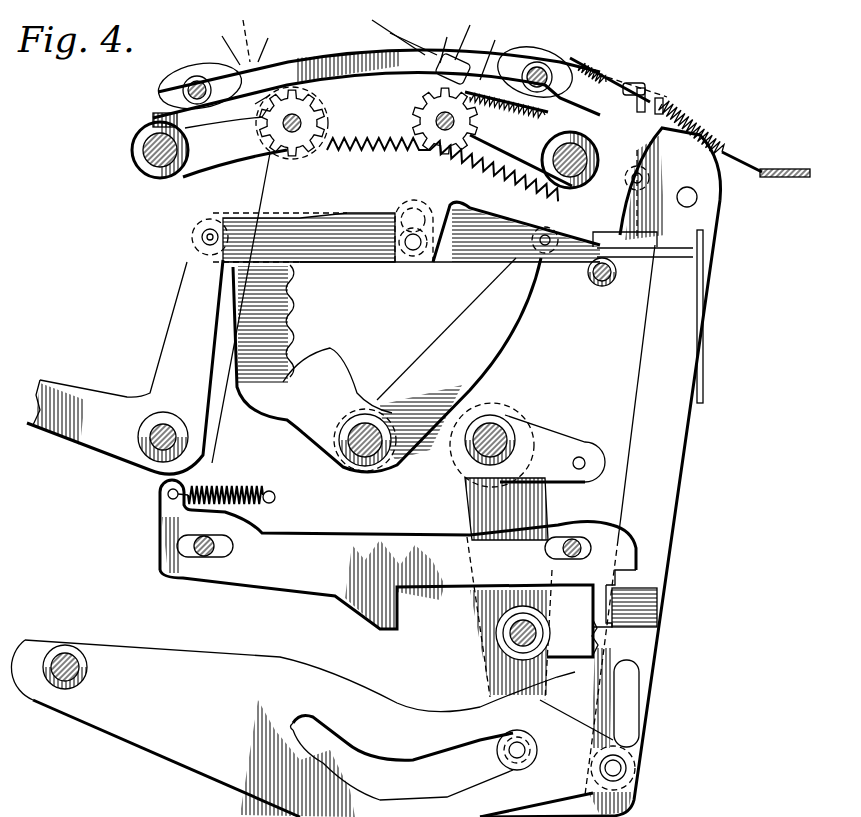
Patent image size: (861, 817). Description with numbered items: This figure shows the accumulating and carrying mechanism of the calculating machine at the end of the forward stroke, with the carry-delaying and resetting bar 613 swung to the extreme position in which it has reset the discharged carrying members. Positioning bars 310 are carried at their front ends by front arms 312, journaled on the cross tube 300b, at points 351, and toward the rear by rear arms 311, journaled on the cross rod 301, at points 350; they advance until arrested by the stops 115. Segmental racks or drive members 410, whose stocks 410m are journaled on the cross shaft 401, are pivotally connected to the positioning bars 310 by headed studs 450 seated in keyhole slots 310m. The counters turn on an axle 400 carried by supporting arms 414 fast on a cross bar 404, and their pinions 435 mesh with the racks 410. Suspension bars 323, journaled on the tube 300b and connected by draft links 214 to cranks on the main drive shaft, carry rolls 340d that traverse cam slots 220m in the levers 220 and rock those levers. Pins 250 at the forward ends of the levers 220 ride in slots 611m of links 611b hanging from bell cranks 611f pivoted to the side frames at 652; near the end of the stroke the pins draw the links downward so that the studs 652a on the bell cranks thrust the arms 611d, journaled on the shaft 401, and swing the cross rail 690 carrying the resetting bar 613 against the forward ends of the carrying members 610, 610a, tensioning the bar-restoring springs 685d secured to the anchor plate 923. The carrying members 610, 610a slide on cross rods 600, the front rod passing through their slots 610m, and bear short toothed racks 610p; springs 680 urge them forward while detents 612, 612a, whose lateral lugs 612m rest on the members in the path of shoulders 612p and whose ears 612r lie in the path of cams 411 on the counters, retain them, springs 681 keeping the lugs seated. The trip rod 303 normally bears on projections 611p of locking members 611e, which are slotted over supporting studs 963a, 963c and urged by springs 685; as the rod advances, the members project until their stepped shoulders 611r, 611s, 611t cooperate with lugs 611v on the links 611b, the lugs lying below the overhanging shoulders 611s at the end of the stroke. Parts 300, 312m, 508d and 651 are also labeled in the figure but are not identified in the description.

The stops 115 is at (713, 370).
The draft links 214 is at (597, 638).
The levers 220 is at (217, 777).
The cam slots 220m is at (402, 757).
The pins 250 is at (617, 772).
The pivot pin 300 is at (473, 453).
The tube 300b is at (478, 430).
The cross rod 301 is at (155, 425).
The trip rod 303 is at (510, 633).
The positioning bars 310 is at (473, 263).
The keyhole slots 310m is at (393, 260).
The rear arms 311 is at (190, 337).
The front arms 312 is at (530, 383).
The link portion 312m is at (597, 430).
The suspension bars 323 is at (475, 505).
The rolls 340d is at (497, 750).
The pivot points 350 is at (202, 238).
The pivot points 351 is at (543, 262).
The axle 400 is at (417, 122).
The cross shaft 401 is at (372, 473).
The cross bar 404 is at (147, 170).
The segmental racks 410 is at (406, 318).
The stocks 410m is at (284, 332).
The cams 411 is at (272, 60).
The supporting arms 414 is at (219, 163).
The pinions 435 is at (322, 101).
The headed studs 450 is at (417, 262).
The pivot stud 508d is at (70, 657).
The cross rods 600 is at (195, 83).
The carrying members 610 is at (510, 45).
The carrying members 610a is at (370, 62).
The slots 610m is at (555, 62).
The toothed racks 610p is at (325, 73).
The links 611b is at (672, 457).
The arms 611d is at (425, 368).
The locking members 611e is at (323, 583).
The bell cranks 611f is at (665, 160).
The slots 611m is at (628, 715).
The projections 611p is at (400, 615).
The shoulders 611r is at (637, 585).
The overhanging shoulders 611s is at (640, 572).
The shoulders 611t is at (655, 542).
The lugs 611v is at (630, 613).
The detents 612 is at (244, 31).
The detents 612a is at (508, 48).
The lateral lugs 612m is at (375, 31).
The shoulders 612p is at (323, 38).
The lateral ears 612r is at (380, 27).
The carry-delaying and resetting bar 613 is at (640, 88).
The stop 651 is at (662, 100).
The pivot 652 is at (672, 207).
The projecting studs 652a is at (607, 290).
The springs 680 is at (607, 67).
The springs 681 is at (506, 115).
The springs 685 is at (247, 473).
The bar-restoring springs 685d is at (680, 112).
The cross rail 690 is at (693, 130).
The anchor plate 923 is at (793, 167).
The supporting studs 963a is at (207, 556).
The supporting studs 963c is at (580, 538).